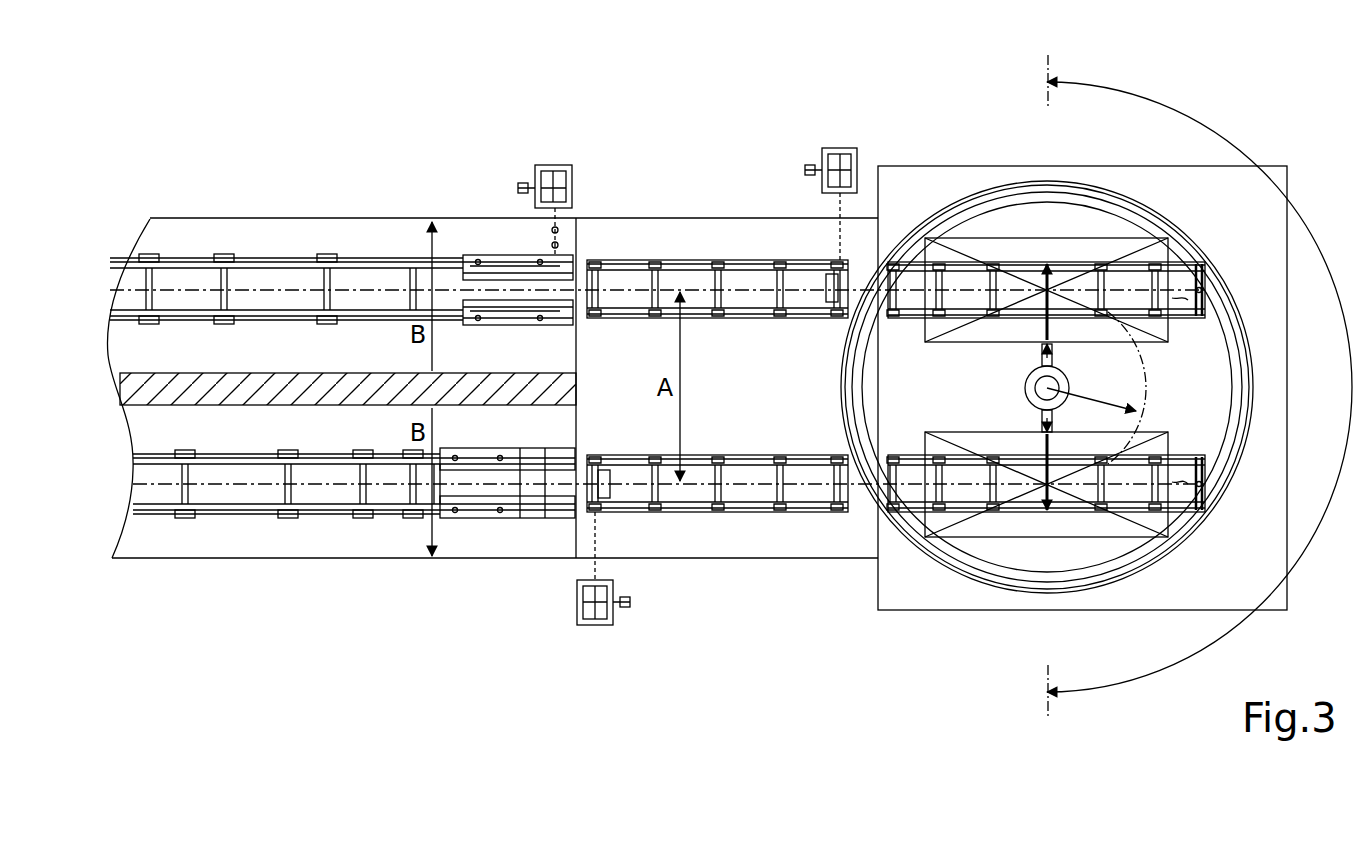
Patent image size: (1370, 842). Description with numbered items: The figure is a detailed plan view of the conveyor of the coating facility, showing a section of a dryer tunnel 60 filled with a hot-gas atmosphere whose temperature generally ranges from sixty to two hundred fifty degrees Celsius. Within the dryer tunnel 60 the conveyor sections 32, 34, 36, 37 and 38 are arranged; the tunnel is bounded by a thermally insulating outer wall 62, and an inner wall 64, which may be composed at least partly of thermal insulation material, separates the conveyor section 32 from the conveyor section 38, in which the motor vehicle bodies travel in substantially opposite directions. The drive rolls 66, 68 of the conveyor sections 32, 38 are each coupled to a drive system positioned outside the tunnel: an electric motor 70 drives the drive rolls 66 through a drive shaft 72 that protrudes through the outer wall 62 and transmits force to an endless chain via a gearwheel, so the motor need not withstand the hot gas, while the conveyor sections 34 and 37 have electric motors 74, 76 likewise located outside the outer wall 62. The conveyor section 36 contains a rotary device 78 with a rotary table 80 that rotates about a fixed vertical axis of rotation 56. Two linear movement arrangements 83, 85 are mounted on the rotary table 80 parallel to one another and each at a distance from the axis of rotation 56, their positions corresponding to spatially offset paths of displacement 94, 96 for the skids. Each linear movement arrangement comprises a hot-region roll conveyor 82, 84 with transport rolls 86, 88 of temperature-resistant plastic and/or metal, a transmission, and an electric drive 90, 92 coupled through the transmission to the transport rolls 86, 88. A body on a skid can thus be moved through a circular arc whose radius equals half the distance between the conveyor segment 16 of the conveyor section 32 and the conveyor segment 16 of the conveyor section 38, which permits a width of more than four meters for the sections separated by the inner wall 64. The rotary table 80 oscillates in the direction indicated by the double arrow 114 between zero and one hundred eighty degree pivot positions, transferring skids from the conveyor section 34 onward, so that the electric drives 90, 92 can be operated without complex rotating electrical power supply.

The conveyor segment 16 is at (259, 288).
The conveyor section 32 is at (394, 243).
The conveyor section 34 is at (713, 243).
The conveyor section 36 is at (1160, 192).
The conveyor section 37 is at (712, 514).
The conveyor section 38 is at (393, 532).
The axis of rotation 56 is at (1036, 388).
The dryer tunnel 60 is at (151, 213).
The outer wall 62 is at (455, 218).
The inner wall 64 is at (361, 380).
The drive rolls 66 is at (226, 255).
The drive rolls 68 is at (185, 520).
The electric motor 70 is at (549, 165).
The drive shaft 72 is at (556, 216).
The electric motor 74 is at (838, 148).
The electric motor 76 is at (596, 625).
The rotary device 78 is at (1101, 198).
The rotary table 80 is at (1216, 398).
The roll conveyor 82 is at (1007, 262).
The linear movement arrangement 83 is at (1210, 278).
The roll conveyor 84 is at (1005, 512).
The linear movement arrangement 85 is at (1211, 496).
The transport rolls 86 is at (988, 283).
The transport rolls 88 is at (990, 492).
The electric drive 90 is at (1054, 354).
The electric drive 92 is at (1054, 418).
The path of displacement 94 is at (1200, 299).
The path of displacement 96 is at (1205, 482).
The double arrow 114 is at (1158, 104).